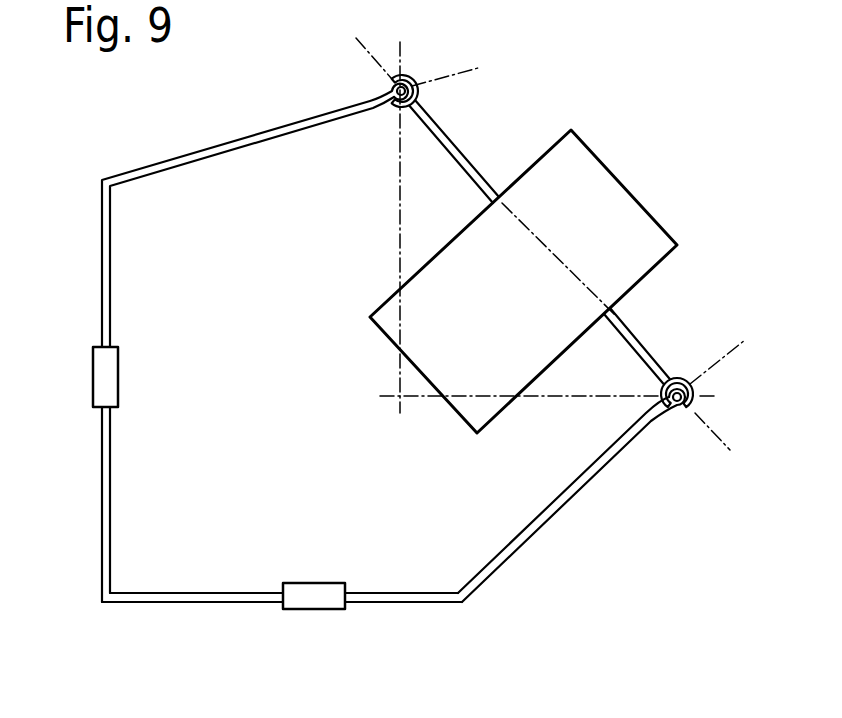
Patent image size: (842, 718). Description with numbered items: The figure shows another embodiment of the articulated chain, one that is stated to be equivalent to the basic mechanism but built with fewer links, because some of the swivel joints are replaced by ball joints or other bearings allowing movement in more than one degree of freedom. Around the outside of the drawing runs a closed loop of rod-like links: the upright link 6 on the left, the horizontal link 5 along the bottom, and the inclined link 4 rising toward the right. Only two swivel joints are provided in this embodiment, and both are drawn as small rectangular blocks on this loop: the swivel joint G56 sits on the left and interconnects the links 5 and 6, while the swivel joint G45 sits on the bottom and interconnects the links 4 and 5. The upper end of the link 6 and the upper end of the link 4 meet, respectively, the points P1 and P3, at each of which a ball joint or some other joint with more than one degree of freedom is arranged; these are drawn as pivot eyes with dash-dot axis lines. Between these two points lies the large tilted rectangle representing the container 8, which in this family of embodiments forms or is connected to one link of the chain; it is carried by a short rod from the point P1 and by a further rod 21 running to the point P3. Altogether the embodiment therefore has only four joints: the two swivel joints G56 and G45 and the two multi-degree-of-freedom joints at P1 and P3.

The link 6 is at (102, 242).
The swivel joint G56 is at (100, 380).
The link 5 is at (154, 598).
The swivel joint G45 is at (312, 600).
The link 4 is at (560, 507).
The point P1 is at (412, 63).
The container 8 is at (607, 200).
The rod 21 is at (640, 340).
The point P3 is at (692, 404).